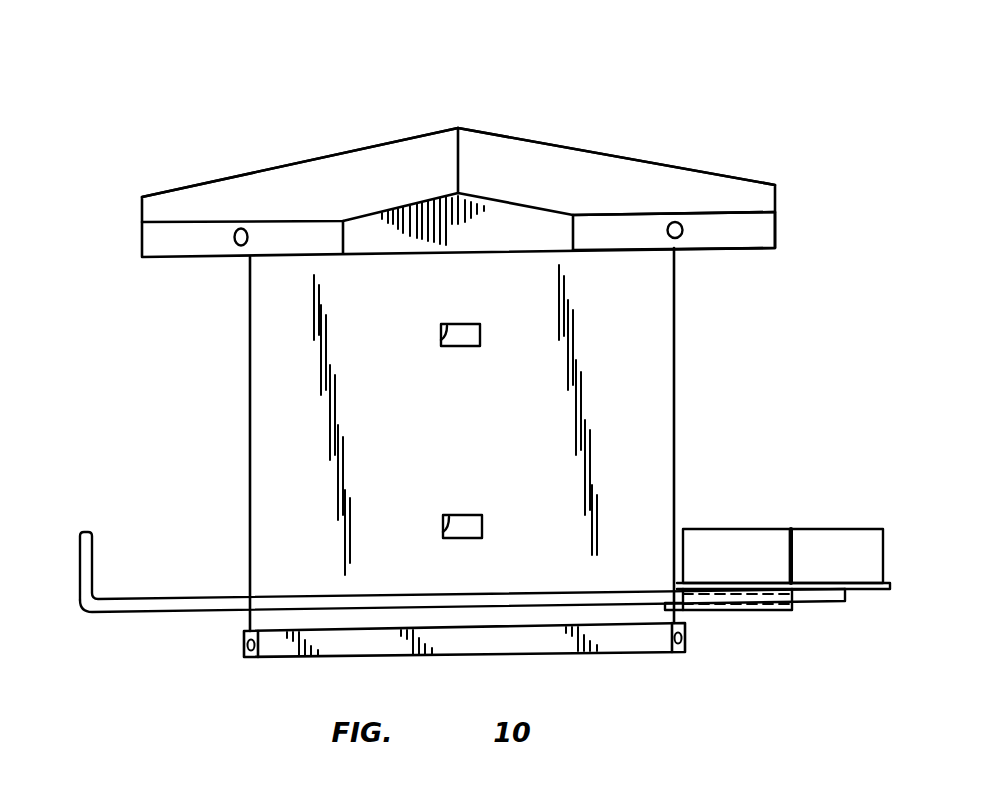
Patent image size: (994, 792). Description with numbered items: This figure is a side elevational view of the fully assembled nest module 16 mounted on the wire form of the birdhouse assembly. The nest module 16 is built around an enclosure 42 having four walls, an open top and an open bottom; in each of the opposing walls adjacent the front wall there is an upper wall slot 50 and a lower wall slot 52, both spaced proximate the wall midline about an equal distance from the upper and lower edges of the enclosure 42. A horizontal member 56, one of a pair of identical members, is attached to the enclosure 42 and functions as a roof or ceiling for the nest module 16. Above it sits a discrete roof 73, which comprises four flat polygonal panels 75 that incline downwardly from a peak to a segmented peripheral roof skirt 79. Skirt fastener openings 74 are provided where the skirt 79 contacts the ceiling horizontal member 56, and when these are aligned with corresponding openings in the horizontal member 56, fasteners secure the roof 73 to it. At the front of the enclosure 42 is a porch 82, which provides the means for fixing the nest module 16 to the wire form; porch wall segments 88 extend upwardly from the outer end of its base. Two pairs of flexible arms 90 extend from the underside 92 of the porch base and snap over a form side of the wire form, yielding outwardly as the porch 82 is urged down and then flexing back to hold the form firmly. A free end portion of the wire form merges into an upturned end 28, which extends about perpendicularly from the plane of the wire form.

The nest module 16 is at (188, 321).
The upturned end 28 is at (88, 560).
The enclosure 42 is at (245, 387).
The upper wall slot 50 is at (447, 326).
The lower wall slot 52 is at (449, 518).
The horizontal member 56 is at (240, 646).
The roof 73 is at (585, 146).
The skirt fastener opening 74 is at (234, 234).
The flat polygonal panel 75 is at (400, 153).
The segmented peripheral roof skirt 79 is at (752, 228).
The porch 82 is at (824, 522).
The porch wall segment 88 is at (733, 548).
The flexible arm 90 is at (763, 612).
The underside 92 is at (868, 592).